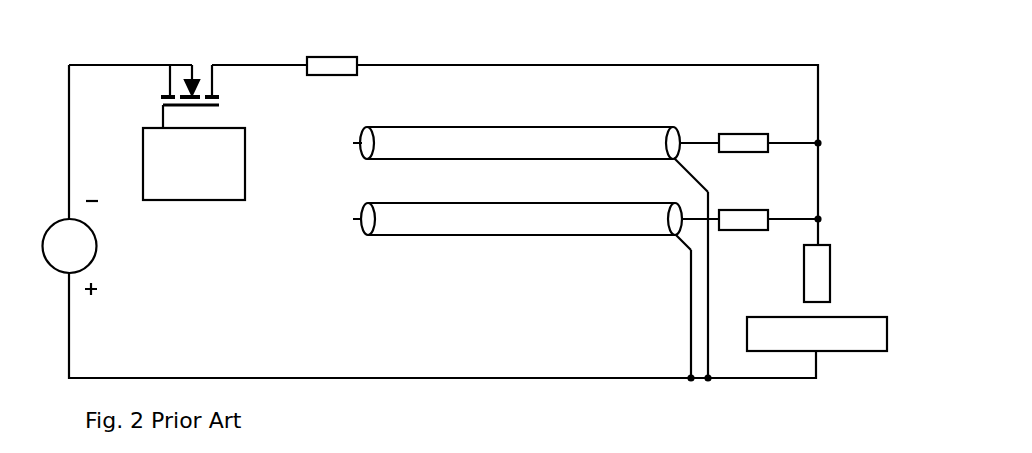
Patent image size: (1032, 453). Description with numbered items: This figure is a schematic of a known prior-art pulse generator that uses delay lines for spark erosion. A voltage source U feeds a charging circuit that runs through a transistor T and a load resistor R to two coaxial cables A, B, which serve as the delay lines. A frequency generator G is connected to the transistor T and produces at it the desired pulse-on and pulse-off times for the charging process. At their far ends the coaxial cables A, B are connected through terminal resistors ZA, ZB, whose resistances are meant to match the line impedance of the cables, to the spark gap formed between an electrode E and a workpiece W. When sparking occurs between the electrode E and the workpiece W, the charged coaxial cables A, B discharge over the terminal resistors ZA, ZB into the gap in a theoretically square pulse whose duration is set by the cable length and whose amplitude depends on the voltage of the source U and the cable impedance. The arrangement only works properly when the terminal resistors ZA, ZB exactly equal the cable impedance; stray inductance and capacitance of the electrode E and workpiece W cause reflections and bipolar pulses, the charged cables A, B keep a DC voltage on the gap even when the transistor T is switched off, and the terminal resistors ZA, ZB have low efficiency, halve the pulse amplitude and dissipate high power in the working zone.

The transistor T is at (186, 63).
The frequency generator G is at (219, 185).
The load resistor R is at (325, 58).
The voltage source U is at (52, 268).
The coaxial cable A is at (603, 135).
The coaxial cable B is at (620, 227).
The terminal resistor ZA is at (740, 138).
The terminal resistor ZB is at (755, 213).
The electrode E is at (823, 270).
The workpiece W is at (845, 342).